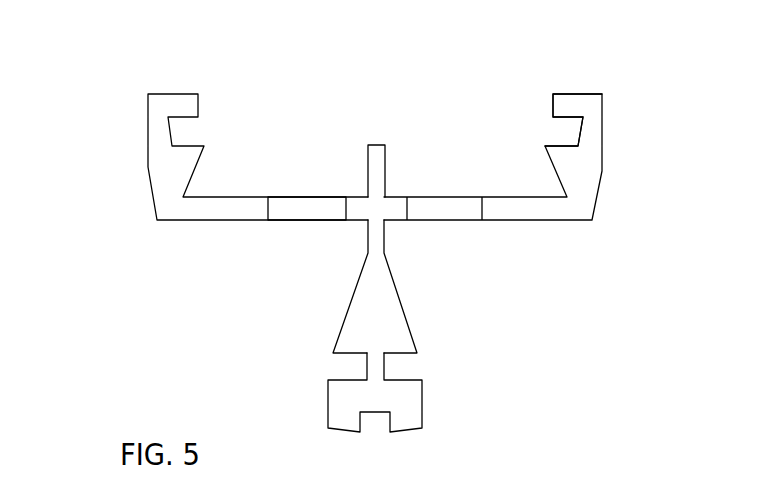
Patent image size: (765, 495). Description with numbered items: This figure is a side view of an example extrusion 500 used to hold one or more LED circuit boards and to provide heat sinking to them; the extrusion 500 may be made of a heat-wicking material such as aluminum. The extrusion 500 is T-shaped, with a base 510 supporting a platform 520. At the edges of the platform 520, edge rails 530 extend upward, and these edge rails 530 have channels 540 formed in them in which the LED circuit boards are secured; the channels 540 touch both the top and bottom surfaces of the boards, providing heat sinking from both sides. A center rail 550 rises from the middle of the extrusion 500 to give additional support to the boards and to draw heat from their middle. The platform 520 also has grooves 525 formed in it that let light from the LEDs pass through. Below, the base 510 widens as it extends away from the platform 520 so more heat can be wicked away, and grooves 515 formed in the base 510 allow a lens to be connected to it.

The extrusion 500 is at (100, 129).
The base 510 is at (403, 310).
The grooves 515 is at (402, 372).
The platform 520 is at (222, 226).
The grooves 525 is at (307, 201).
The edge rails 530 is at (600, 178).
The channels 540 is at (581, 129).
The center rail 550 is at (383, 144).